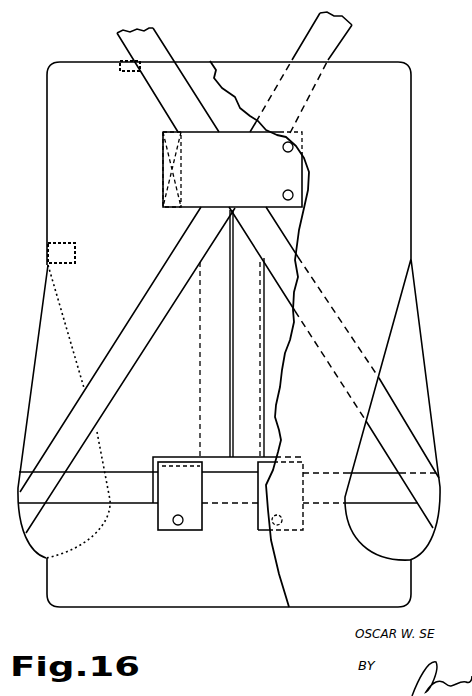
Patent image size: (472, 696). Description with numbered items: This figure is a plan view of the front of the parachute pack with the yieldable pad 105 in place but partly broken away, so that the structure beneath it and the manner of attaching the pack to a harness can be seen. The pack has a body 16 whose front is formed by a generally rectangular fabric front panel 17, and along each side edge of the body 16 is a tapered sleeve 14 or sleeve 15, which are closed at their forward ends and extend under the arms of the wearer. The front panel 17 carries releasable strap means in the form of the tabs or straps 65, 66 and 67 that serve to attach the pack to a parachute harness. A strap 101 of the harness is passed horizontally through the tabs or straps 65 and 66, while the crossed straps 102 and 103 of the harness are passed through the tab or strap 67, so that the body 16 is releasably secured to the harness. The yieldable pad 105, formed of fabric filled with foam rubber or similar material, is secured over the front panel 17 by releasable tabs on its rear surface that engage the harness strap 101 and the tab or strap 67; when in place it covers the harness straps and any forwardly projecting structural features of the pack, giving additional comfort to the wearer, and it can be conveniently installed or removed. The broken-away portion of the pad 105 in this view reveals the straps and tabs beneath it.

The sleeve 14 is at (34, 551).
The sleeve 15 is at (418, 557).
The body 16 is at (133, 610).
The front panel 17 is at (188, 568).
The tab or strap 65 is at (172, 522).
The tab or strap 66 is at (259, 528).
The tab or strap 67 is at (189, 207).
The harness strap 101 is at (137, 473).
The crossed strap 102 is at (168, 274).
The crossed strap 103 is at (155, 54).
The yieldable pad 105 is at (267, 582).